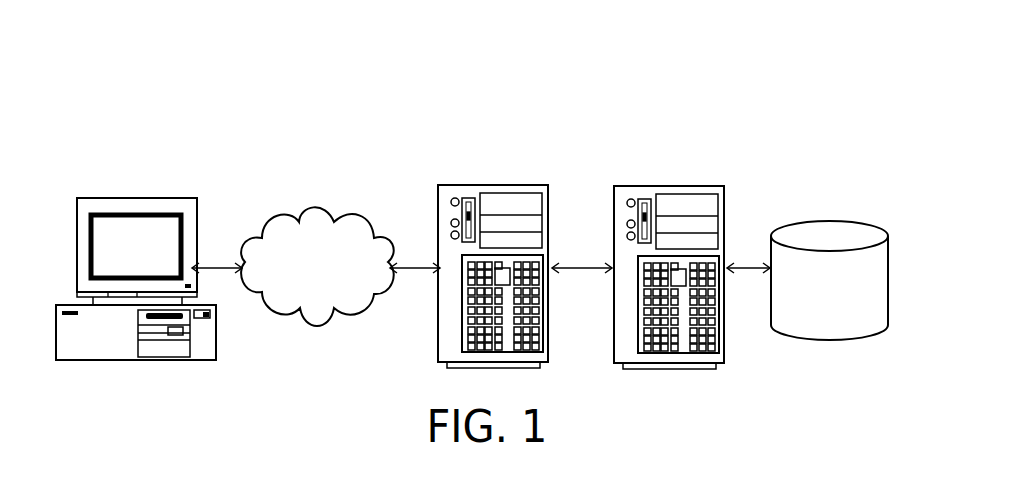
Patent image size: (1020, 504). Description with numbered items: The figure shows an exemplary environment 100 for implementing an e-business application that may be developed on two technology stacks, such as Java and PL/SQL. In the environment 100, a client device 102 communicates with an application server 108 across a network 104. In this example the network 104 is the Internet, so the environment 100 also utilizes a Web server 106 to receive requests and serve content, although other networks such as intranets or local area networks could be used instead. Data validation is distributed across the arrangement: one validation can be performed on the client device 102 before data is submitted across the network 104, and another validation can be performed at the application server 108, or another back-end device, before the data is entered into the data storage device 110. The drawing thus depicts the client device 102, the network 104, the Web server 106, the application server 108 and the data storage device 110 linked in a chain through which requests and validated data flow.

The environment 100 is at (818, 106).
The client device 102 is at (133, 199).
The network 104 is at (317, 266).
The Web server 106 is at (479, 193).
The application server 108 is at (654, 194).
The data storage device 110 is at (829, 280).